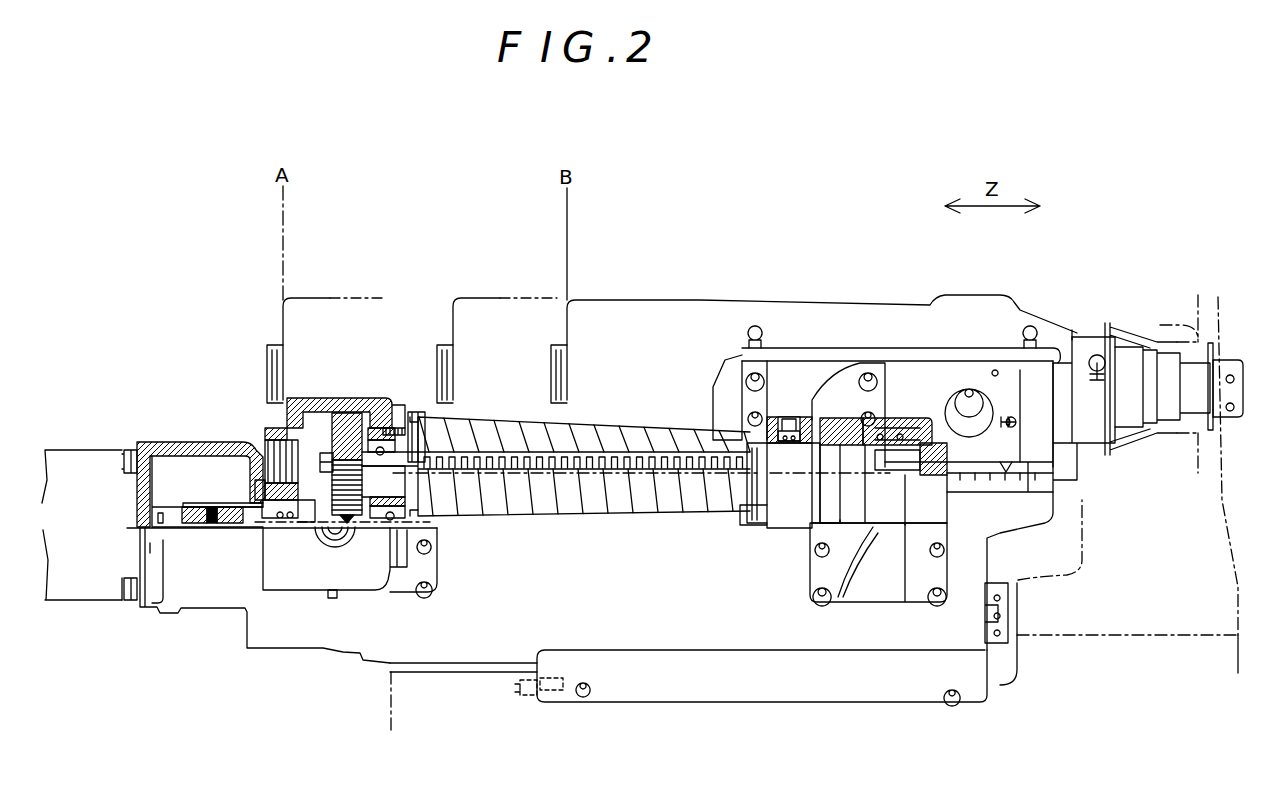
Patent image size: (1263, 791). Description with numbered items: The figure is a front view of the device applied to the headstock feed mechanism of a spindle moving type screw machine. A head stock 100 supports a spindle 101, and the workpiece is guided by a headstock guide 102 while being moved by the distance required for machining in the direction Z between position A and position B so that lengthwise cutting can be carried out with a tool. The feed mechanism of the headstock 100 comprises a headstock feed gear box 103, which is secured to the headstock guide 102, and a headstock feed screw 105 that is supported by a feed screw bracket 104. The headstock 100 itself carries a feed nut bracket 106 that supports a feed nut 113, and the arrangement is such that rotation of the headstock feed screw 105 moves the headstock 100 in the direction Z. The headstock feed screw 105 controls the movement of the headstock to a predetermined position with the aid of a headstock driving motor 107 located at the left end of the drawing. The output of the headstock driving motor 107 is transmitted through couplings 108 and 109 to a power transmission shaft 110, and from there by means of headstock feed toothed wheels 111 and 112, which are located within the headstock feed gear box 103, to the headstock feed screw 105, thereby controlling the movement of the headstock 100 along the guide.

The head stock 100 is at (672, 325).
The spindle 101 is at (1234, 360).
The headstock guide 102 is at (922, 647).
The headstock feed gear box 103 is at (317, 520).
The feed screw bracket 104 is at (870, 597).
The headstock feed screw 105 is at (572, 500).
The feed nut bracket 106 is at (805, 372).
The headstock driving motor 107 is at (93, 588).
The coupling 108 is at (190, 495).
The coupling 109 is at (226, 495).
The power transmission shaft 110 is at (258, 522).
The headstock feed toothed wheel 111 is at (363, 522).
The headstock feed toothed wheel 112 is at (356, 398).
The feed nut 113 is at (773, 500).